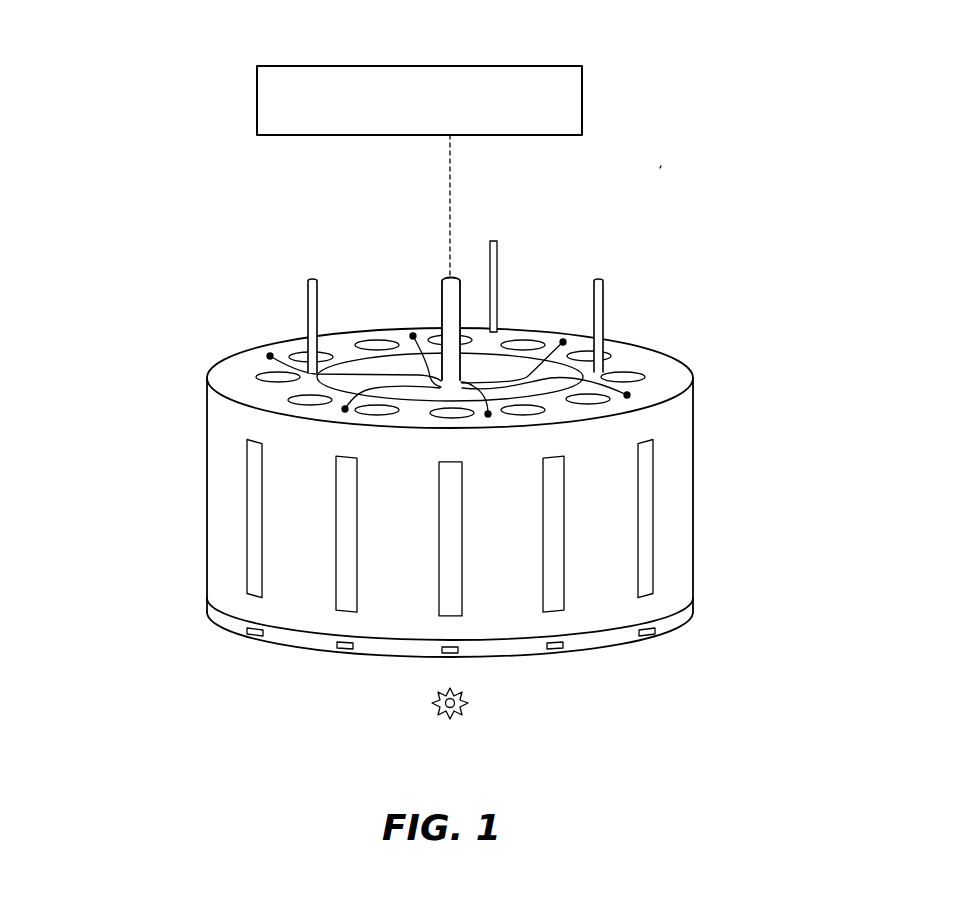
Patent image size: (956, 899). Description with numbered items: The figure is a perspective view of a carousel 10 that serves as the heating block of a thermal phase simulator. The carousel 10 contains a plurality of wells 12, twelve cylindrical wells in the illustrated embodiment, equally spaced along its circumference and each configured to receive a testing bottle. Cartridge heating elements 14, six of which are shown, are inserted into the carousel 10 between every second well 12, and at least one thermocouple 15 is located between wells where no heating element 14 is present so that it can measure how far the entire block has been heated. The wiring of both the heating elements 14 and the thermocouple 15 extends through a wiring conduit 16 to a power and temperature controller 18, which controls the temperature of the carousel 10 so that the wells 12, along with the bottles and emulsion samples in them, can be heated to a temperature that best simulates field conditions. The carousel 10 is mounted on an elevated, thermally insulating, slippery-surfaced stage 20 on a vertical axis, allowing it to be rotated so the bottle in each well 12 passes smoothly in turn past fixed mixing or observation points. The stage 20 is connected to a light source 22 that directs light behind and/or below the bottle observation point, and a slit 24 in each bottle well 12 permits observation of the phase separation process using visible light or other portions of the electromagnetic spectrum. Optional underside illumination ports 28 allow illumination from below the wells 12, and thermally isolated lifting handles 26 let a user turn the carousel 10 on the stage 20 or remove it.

The carousel 10 is at (657, 170).
The wells 12 is at (372, 340).
The cartridge heating elements 14 is at (565, 337).
The thermocouple 15 is at (496, 262).
The wiring conduit 16 is at (447, 298).
The power and temperature controller 18 is at (421, 66).
The stage 20 is at (680, 618).
The light source 22 is at (462, 708).
The slit 24 is at (247, 497).
The lifting handles 26 is at (308, 293).
The underside illumination ports 28 is at (252, 635).